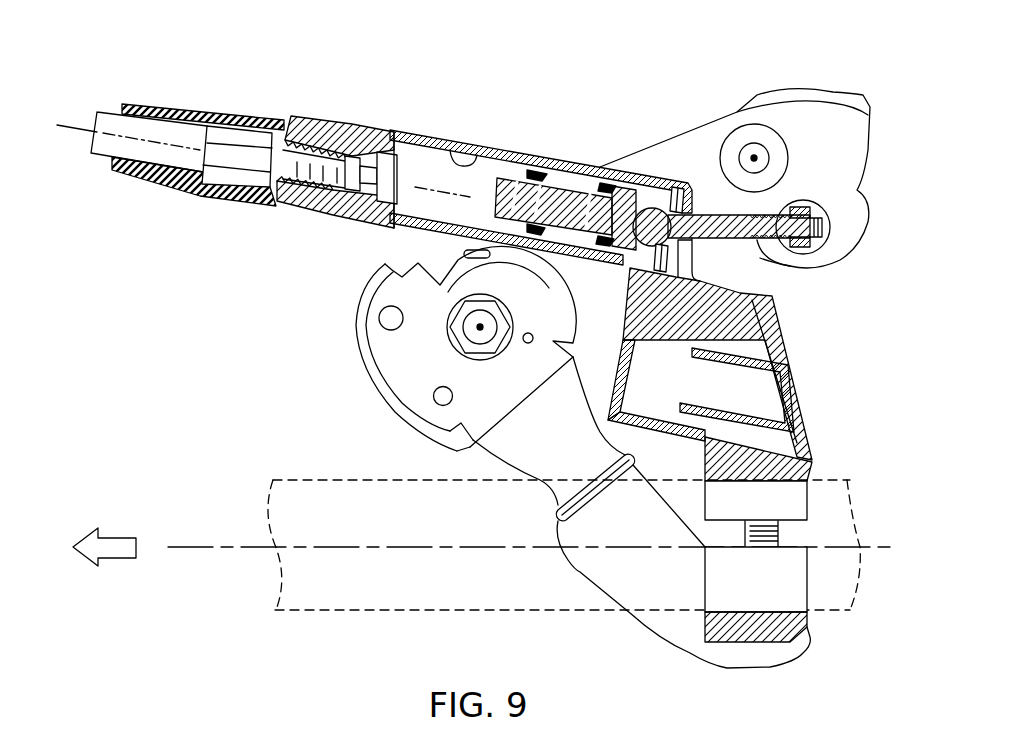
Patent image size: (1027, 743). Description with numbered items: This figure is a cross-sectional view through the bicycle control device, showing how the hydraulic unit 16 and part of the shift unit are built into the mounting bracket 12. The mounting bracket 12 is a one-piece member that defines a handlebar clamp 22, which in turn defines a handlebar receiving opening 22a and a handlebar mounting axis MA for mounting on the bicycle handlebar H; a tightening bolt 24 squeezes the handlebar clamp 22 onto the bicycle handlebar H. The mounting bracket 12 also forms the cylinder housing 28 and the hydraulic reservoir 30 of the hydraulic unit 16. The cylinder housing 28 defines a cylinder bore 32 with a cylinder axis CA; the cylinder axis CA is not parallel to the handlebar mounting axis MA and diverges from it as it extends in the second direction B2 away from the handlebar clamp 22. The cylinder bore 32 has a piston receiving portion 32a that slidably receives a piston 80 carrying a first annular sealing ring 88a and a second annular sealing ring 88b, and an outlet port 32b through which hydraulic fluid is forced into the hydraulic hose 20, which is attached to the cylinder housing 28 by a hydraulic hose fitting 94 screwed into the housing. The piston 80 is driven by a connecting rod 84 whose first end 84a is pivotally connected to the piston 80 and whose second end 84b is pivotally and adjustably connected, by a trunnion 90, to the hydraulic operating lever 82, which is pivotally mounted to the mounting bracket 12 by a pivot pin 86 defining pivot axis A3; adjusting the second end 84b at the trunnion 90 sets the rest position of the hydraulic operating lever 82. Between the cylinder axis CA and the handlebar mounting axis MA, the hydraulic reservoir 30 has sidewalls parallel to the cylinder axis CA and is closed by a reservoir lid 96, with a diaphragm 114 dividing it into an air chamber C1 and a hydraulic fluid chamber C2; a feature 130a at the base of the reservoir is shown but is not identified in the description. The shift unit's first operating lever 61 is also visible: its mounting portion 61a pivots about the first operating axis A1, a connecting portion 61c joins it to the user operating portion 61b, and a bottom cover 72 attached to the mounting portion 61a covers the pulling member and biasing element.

The hydraulic hose 20 is at (112, 112).
The cylinder housing 28 is at (334, 117).
The hydraulic unit 16 is at (390, 128).
The outlet port 32b is at (407, 172).
The piston receiving portion 32a is at (470, 158).
The first annular sealing ring 88a is at (545, 170).
The second annular sealing ring 88b is at (600, 192).
The first end 84a is at (658, 210).
The piston 80 is at (575, 180).
The hydraulic operating lever 82 is at (850, 88).
The pivot axis A3 is at (756, 157).
The pivot pin 86 is at (788, 167).
The trunnion 90 is at (826, 247).
The connecting rod 84 is at (718, 242).
The second end 84b is at (778, 252).
The cylinder axis CA is at (76, 130).
The hydraulic hose fitting 94 is at (231, 183).
The cylinder bore 32 is at (411, 220).
The mounting portion 61a is at (378, 282).
The take-up axis A1 is at (478, 328).
The hydraulic reservoir 30 is at (605, 377).
The hydraulic fluid chamber C2 is at (640, 393).
The bottom cover 72 is at (386, 406).
The diaphragm 114 is at (772, 356).
The reservoir lid 96 is at (802, 394).
The air chamber C1 is at (766, 405).
The bottom wall 130a is at (706, 442).
The mounting bracket 12 is at (818, 466).
The handlebar mounting axis MA is at (200, 546).
The connecting portion 61c is at (502, 463).
The tightening bolt 24 is at (780, 531).
The second direction B2 is at (118, 558).
The bicycle handlebar H is at (328, 612).
The handlebar receiving opening 22a is at (806, 595).
The first operating lever 61 is at (659, 641).
The handlebar clamp 22 is at (771, 643).
The user operating portion 61b is at (727, 669).